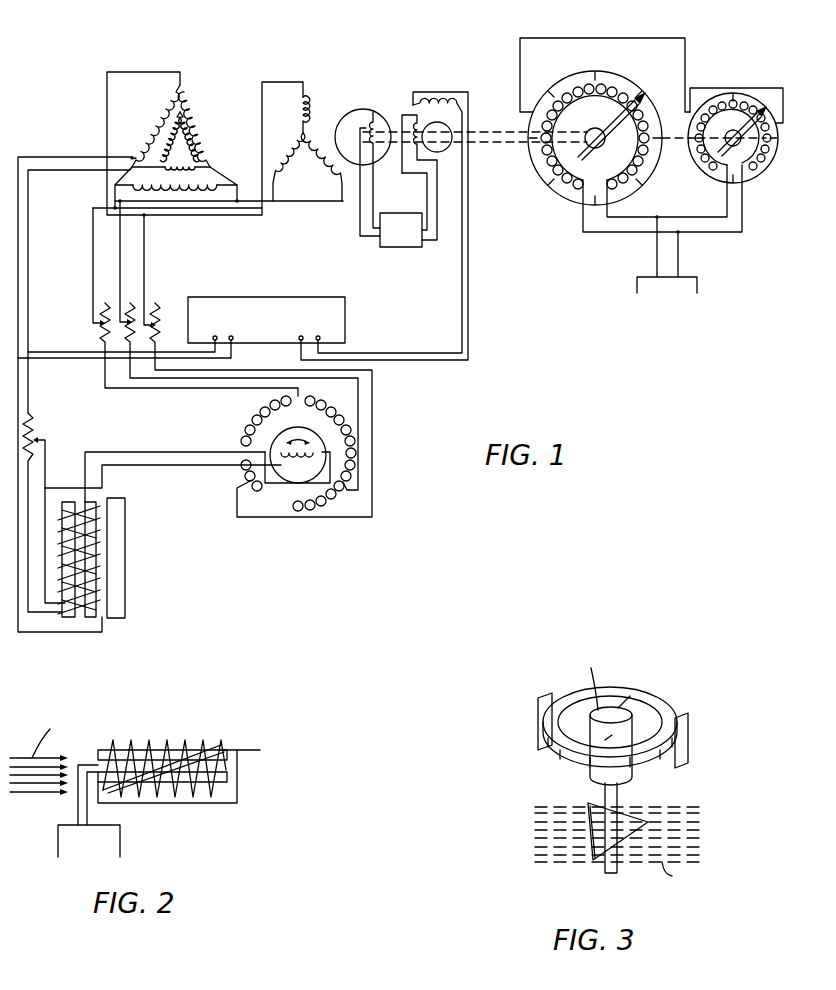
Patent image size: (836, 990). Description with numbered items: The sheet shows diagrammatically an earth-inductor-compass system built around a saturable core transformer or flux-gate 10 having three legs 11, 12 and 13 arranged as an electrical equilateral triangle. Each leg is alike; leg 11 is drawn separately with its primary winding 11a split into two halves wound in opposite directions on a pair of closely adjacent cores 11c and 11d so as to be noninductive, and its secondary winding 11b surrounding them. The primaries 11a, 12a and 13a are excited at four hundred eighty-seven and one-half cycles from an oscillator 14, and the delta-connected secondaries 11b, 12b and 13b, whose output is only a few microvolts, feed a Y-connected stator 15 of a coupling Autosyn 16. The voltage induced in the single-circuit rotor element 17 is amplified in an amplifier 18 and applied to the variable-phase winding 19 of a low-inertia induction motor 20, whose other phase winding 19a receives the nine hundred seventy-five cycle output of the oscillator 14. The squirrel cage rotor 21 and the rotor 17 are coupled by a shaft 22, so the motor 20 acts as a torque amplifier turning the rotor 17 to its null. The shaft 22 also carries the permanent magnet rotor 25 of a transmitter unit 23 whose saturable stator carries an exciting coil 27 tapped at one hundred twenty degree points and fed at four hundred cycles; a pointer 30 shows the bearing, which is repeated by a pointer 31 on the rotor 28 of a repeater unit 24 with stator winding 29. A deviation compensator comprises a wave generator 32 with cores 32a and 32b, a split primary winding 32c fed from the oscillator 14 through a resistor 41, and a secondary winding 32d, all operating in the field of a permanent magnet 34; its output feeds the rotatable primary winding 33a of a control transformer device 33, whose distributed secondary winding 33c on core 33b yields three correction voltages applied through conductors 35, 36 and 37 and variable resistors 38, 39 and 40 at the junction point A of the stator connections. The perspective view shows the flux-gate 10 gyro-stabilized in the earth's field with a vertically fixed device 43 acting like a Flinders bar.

In FIG. 1, the flux-gate 10 is at (158, 62).
In FIG. 3, the flux-gate 10 is at (593, 861).
In FIG. 1, the leg 11 is at (231, 106).
In FIG. 2, the leg 11 is at (266, 814).
In FIG. 1, the primary winding 11a is at (210, 120).
In FIG. 2, the primary winding 11a is at (181, 794).
In FIG. 1, the secondary winding 11b is at (222, 138).
In FIG. 2, the secondary winding 11b is at (184, 748).
In FIG. 2, the core 11c is at (228, 774).
In FIG. 2, the core 11d is at (227, 748).
In FIG. 1, the leg 12 is at (127, 120).
In FIG. 1, the primary winding 12a is at (165, 112).
In FIG. 1, the secondary winding 12b is at (137, 150).
In FIG. 1, the leg 13 is at (186, 233).
In FIG. 1, the primary winding 13a is at (180, 163).
In FIG. 1, the secondary winding 13b is at (194, 192).
In FIG. 1, the oscillator 14 is at (256, 289).
In FIG. 1, the Y-connected stator 15 is at (302, 133).
In FIG. 1, the coupling Autosyn 16 is at (318, 73).
In FIG. 1, the rotor element 17 is at (356, 120).
In FIG. 1, the amplifier 18 is at (400, 249).
In FIG. 1, the variable-phase winding 19 is at (410, 148).
In FIG. 1, the phase winding 19a is at (469, 117).
In FIG. 1, the induction motor 20 is at (446, 81).
In FIG. 1, the squirrel cage rotor 21 is at (444, 151).
In FIG. 1, the shaft 22 is at (515, 145).
In FIG. 1, the transmitter unit 23 is at (604, 29).
In FIG. 1, the repeater unit 24 is at (747, 61).
In FIG. 1, the permanent magnet rotor 25 is at (600, 130).
In FIG. 1, the exciting coil 27 is at (621, 182).
In FIG. 1, the rotor 28 is at (712, 145).
In FIG. 1, the stator winding 29 is at (758, 180).
In FIG. 1, the pointer 30 is at (633, 96).
In FIG. 1, the pointer 31 is at (763, 97).
In FIG. 1, the wave generator 32 is at (157, 621).
In FIG. 1, the core 32a is at (70, 620).
In FIG. 1, the core 32b is at (92, 620).
In FIG. 1, the primary winding 32c is at (85, 561).
In FIG. 1, the secondary winding 32d is at (95, 546).
In FIG. 1, the control transformer device 33 is at (242, 421).
In FIG. 1, the rotatable primary winding 33a is at (287, 458).
In FIG. 1, the core 33b is at (351, 463).
In FIG. 1, the distributed secondary winding 33c is at (336, 411).
In FIG. 1, the permanent magnet 34 is at (126, 580).
In FIG. 1, the conductor 35 is at (144, 235).
In FIG. 1, the conductor 36 is at (120, 256).
In FIG. 1, the conductor 37 is at (93, 277).
In FIG. 1, the variable resistor 38 is at (104, 306).
In FIG. 1, the variable resistor 39 is at (128, 303).
In FIG. 1, the variable resistor 40 is at (156, 303).
In FIG. 1, the resistor 41 is at (37, 435).
In FIG. 3, the device 43 is at (600, 872).
In FIG. 1, the point A is at (175, 369).